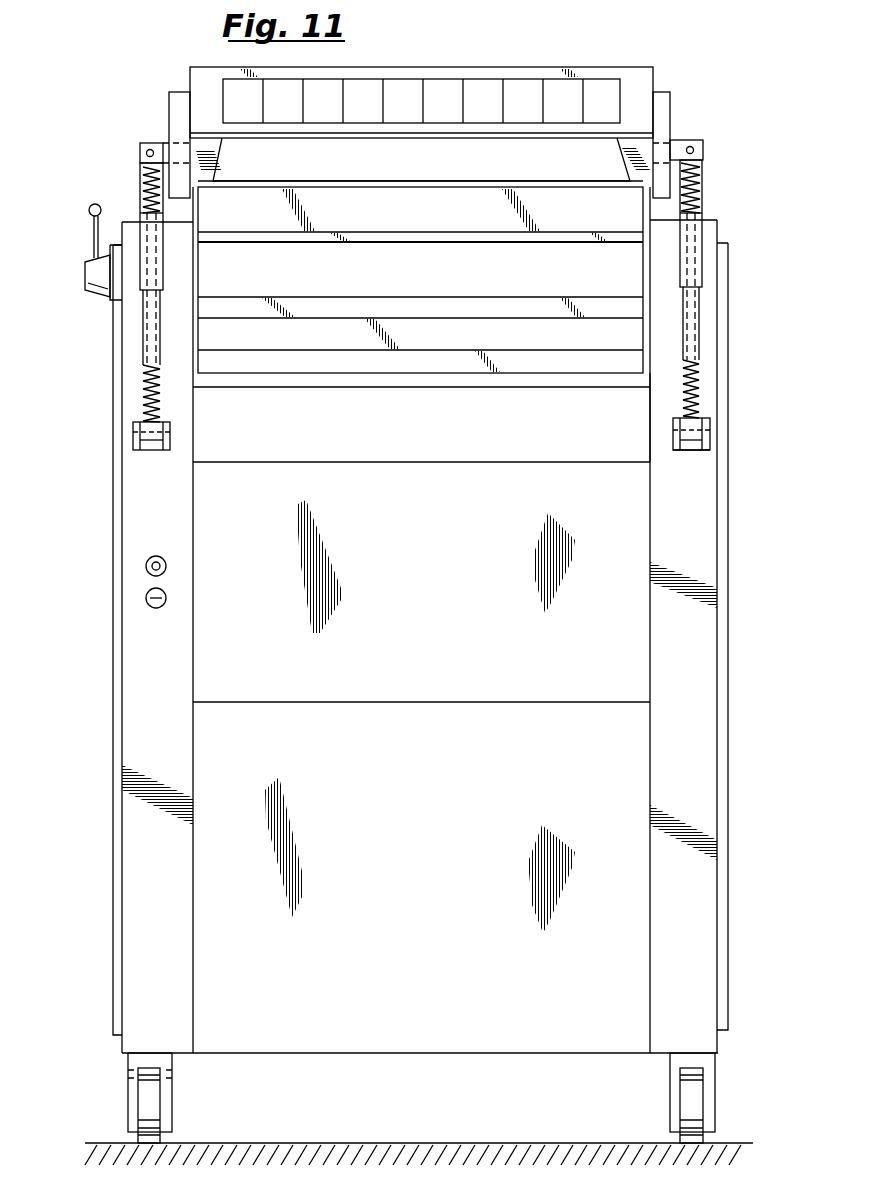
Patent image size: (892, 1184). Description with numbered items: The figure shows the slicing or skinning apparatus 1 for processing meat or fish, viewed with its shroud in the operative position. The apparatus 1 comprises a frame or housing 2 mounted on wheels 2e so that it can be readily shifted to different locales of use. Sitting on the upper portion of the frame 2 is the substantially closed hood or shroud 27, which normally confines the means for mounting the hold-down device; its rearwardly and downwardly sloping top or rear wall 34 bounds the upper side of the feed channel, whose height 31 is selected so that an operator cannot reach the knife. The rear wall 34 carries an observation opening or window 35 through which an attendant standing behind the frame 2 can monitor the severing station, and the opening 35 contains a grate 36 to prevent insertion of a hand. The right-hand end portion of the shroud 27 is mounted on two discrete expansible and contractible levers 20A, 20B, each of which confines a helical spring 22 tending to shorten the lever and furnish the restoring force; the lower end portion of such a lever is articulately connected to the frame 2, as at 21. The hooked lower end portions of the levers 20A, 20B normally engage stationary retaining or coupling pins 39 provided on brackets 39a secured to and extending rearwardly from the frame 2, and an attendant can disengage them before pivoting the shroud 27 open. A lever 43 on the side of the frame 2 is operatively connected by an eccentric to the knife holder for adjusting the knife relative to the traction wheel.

The slicing or skinning apparatus 1 is at (158, 90).
The frame or housing 2 is at (438, 536).
The wheels 2e is at (150, 1092).
The expansible and contractible lever 20A is at (150, 338).
The expansible and contractible lever 20B is at (682, 305).
The articulate connection to frame 21 is at (672, 405).
The helical spring 22 is at (160, 400).
The hood or shroud 27 is at (640, 70).
The height of the channel 31 is at (515, 283).
The top or rear wall 34 is at (632, 92).
The observation opening or window 35 is at (530, 92).
The grate 36 is at (500, 92).
The retaining or coupling pins 39 is at (165, 452).
The brackets 39a is at (693, 452).
The lever 43 is at (95, 204).